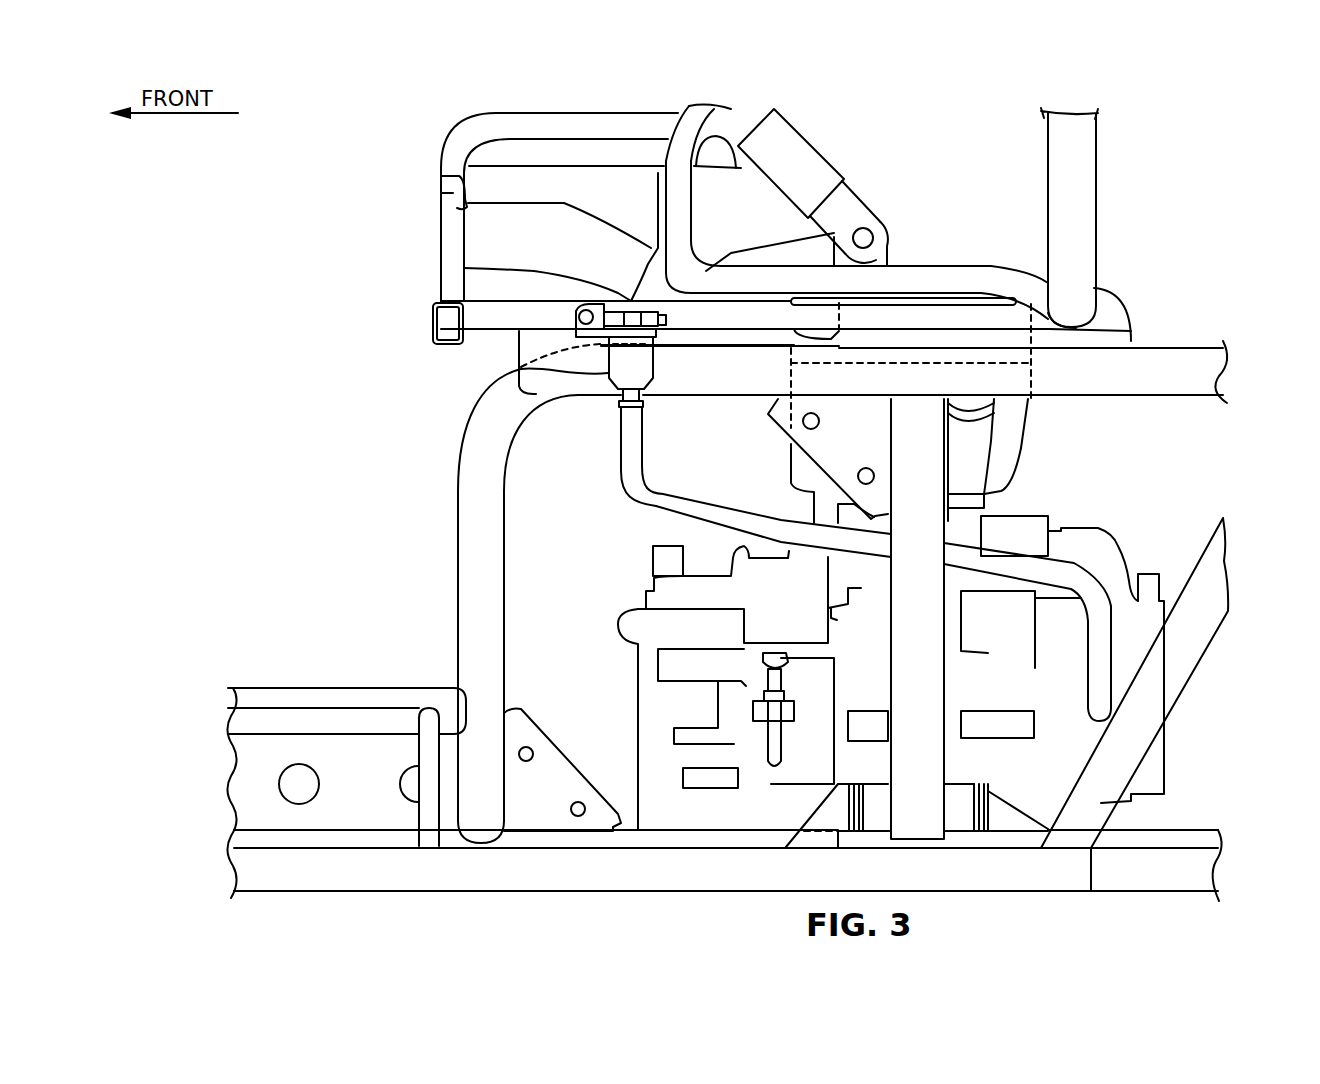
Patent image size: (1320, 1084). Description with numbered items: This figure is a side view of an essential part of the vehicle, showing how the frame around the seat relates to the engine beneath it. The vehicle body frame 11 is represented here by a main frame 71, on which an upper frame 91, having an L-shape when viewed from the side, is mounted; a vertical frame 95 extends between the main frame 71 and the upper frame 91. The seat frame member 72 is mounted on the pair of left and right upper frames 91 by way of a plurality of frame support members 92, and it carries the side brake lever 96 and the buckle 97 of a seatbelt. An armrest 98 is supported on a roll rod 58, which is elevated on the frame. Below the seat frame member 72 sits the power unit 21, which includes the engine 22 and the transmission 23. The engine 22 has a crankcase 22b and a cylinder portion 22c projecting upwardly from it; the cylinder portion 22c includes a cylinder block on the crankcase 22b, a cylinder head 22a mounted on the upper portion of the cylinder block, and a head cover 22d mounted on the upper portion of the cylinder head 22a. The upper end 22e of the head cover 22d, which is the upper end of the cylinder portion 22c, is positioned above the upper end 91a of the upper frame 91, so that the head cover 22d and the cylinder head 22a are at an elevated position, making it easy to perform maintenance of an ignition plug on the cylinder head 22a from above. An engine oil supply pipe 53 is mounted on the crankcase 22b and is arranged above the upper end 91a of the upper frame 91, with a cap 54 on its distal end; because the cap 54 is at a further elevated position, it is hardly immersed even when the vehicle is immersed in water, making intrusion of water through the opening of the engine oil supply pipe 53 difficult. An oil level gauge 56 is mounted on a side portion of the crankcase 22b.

The vehicle body frame 11 is at (452, 620).
The power unit 21 is at (620, 718).
The engine 22 is at (784, 458).
The cylinder head 22a is at (985, 426).
The crankcase 22b is at (1130, 650).
The cylinder portion 22c is at (1020, 488).
The head cover 22d is at (1040, 338).
The upper end of the head cover 22e is at (913, 298).
The transmission 23 is at (698, 818).
The engine oil supply pipe 53 is at (635, 497).
The cap 54 is at (625, 305).
The oil level gauge 56 is at (782, 683).
The roll rod 58 is at (1068, 203).
The main frame 71 is at (1200, 863).
The seat frame member 72 is at (425, 322).
The upper frame 91 is at (478, 558).
The upper end of the upper frame 91a is at (983, 340).
The frame support member 92 is at (517, 342).
The vertical frame 95 is at (918, 465).
The side brake lever 96 is at (507, 183).
The buckle 97 is at (787, 145).
The armrest 98 is at (683, 132).